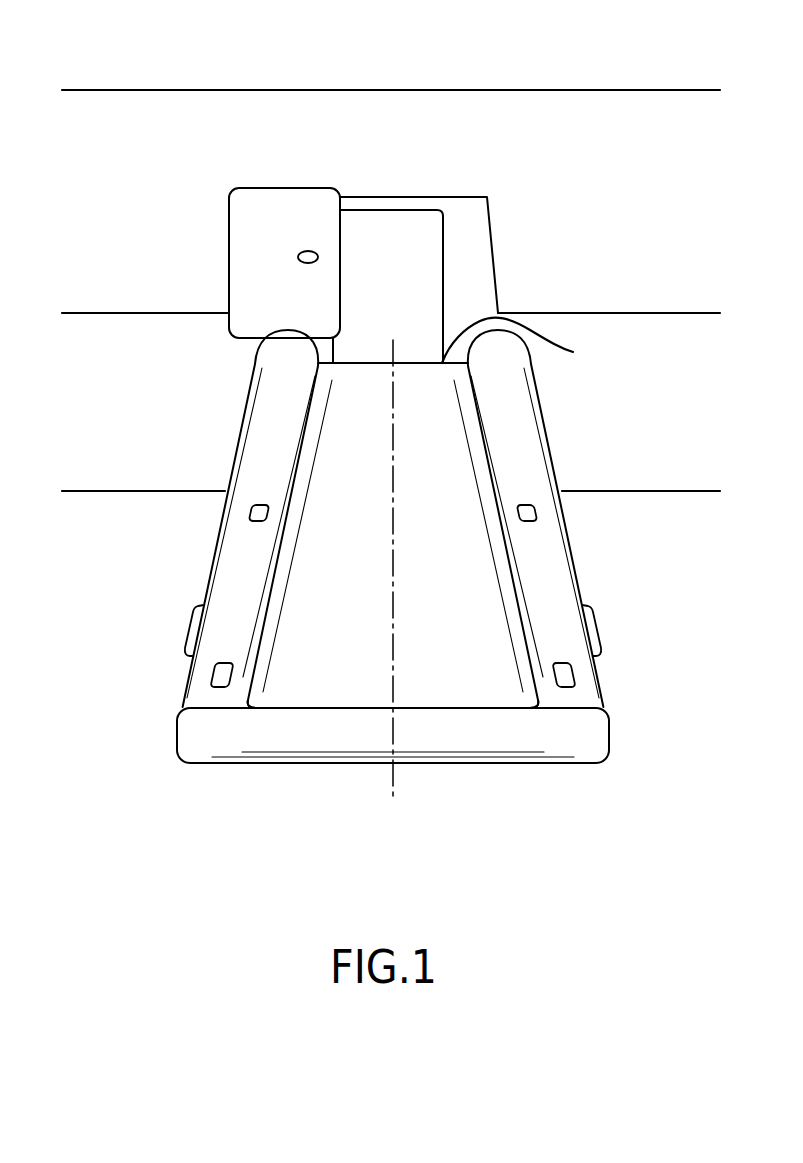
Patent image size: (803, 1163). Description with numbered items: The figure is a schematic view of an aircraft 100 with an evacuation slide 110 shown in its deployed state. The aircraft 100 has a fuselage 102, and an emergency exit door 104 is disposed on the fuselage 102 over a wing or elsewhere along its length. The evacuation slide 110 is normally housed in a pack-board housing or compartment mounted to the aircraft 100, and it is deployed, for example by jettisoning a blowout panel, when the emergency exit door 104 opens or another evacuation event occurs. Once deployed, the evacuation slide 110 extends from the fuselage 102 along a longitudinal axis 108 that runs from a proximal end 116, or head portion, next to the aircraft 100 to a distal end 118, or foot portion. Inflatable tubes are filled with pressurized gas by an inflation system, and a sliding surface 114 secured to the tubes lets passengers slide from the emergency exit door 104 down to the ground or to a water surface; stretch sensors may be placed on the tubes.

The aircraft 100 is at (100, 72).
The fuselage 102 is at (614, 194).
The emergency exit door 104 is at (242, 239).
The longitudinal axis 108 is at (392, 782).
The evacuation slide 110 is at (147, 615).
The sliding surface 114 is at (440, 470).
The proximal end 116 is at (479, 283).
The distal end 118 is at (462, 763).